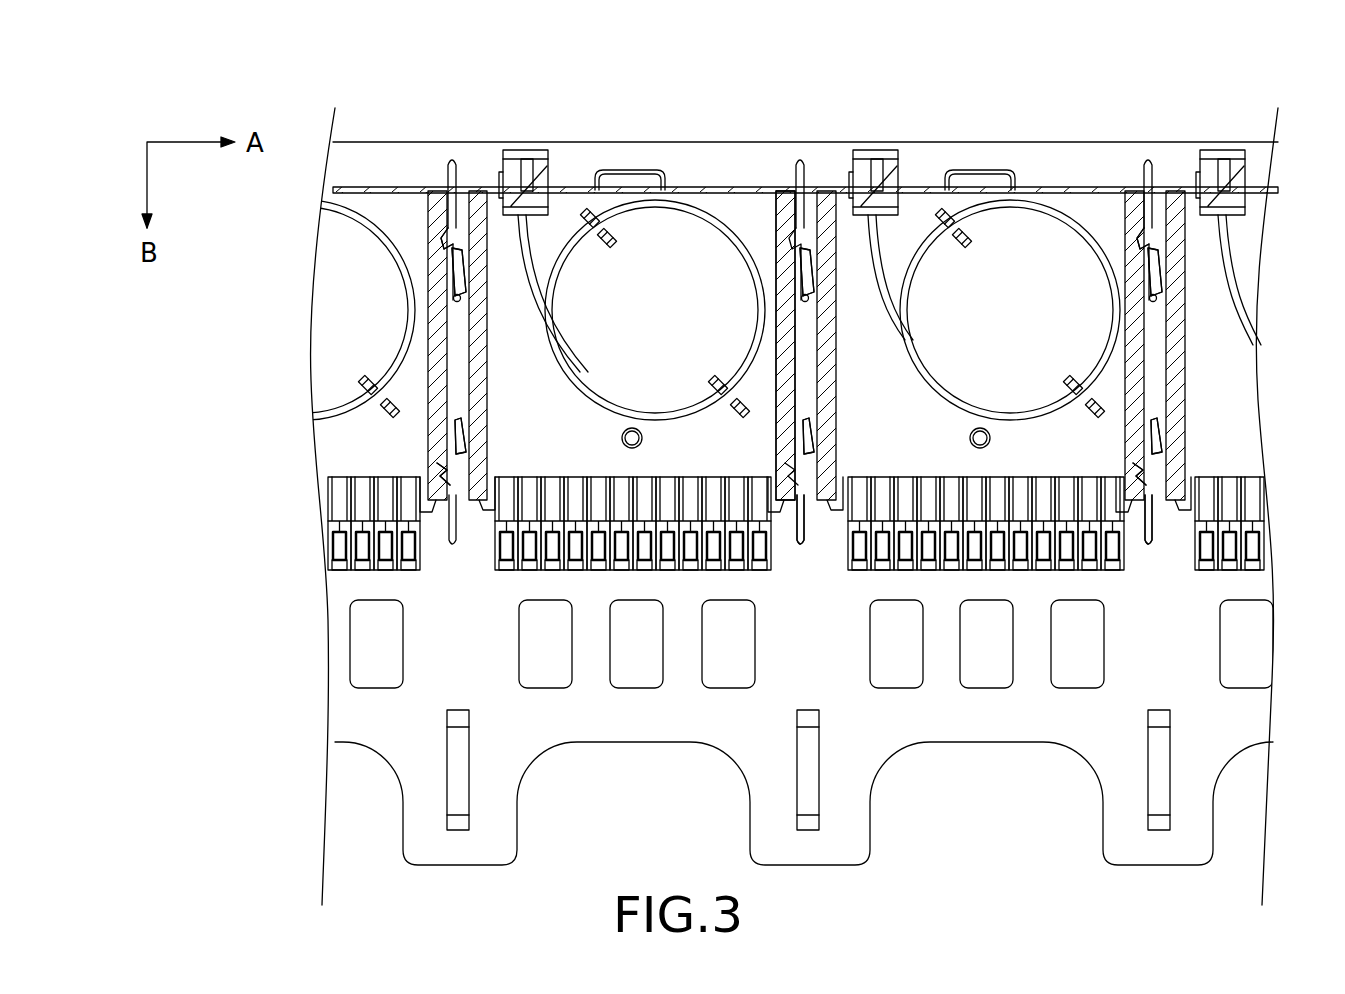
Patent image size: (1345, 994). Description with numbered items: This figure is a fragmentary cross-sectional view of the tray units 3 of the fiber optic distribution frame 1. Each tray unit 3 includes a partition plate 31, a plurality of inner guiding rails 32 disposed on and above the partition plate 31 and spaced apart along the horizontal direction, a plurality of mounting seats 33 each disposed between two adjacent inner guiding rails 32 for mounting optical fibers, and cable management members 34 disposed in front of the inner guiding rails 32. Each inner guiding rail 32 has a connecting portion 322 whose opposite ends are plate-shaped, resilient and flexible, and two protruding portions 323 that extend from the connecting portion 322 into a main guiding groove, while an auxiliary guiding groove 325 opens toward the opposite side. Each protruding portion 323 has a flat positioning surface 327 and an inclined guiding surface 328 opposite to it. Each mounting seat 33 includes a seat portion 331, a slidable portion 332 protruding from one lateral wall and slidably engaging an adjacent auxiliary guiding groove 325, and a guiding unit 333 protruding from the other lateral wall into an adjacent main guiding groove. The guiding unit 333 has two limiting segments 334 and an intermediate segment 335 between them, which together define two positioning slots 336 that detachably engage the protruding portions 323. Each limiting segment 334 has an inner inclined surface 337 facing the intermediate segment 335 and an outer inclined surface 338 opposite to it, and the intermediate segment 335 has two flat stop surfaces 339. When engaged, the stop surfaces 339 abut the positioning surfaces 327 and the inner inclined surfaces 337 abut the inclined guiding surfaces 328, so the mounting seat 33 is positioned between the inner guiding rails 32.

The fiber optic distribution frame 1 is at (1196, 107).
The tray unit 3 is at (1006, 125).
The partition plate 31 is at (637, 730).
The inner guiding rail 32 is at (473, 136).
The mounting seat 33 is at (377, 176).
The cable management member 34 is at (841, 797).
The connecting portion 322 is at (810, 352).
The protruding portion 323 is at (790, 212).
The auxiliary guiding groove 325 is at (1183, 477).
The positioning surface 327 is at (1100, 210).
The inclined guiding surface 328 is at (1127, 200).
The seat portion 331 is at (918, 202).
The slidable portion 332 is at (826, 542).
The guiding unit 333 is at (762, 270).
The limiting segment 334 is at (789, 205).
The intermediate segment 335 is at (784, 312).
The positioning slot 336 is at (467, 225).
The inner inclined surface 337 is at (440, 228).
The outer inclined surface 338 is at (448, 226).
The stop surface 339 is at (826, 235).